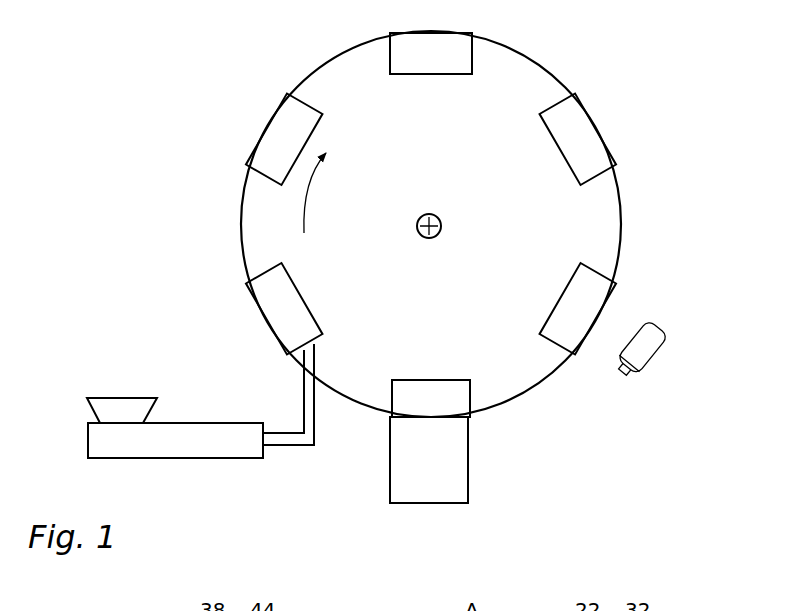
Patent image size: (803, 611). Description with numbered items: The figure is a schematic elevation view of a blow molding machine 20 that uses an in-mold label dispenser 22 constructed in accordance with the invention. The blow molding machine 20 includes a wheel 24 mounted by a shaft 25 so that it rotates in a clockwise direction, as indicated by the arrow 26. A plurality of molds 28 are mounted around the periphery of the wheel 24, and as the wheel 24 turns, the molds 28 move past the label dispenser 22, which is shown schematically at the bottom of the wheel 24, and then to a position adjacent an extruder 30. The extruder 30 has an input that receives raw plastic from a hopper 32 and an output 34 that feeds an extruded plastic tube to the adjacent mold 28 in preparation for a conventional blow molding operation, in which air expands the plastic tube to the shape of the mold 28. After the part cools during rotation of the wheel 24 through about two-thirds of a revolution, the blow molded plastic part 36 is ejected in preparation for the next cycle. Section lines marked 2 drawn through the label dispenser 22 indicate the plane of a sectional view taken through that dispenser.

The blow molding machine 20 is at (446, 224).
The in-mold label dispenser 22 is at (474, 457).
The wheel 24 is at (530, 63).
The shaft 25 is at (443, 222).
The arrow 26 is at (308, 190).
The molds 28 is at (428, 40).
The extruder 30 is at (200, 448).
The hopper 32 is at (97, 407).
The output 34 is at (310, 420).
The blow molded plastic part 36 is at (653, 357).
The section line 2- 2 is at (403, 346).